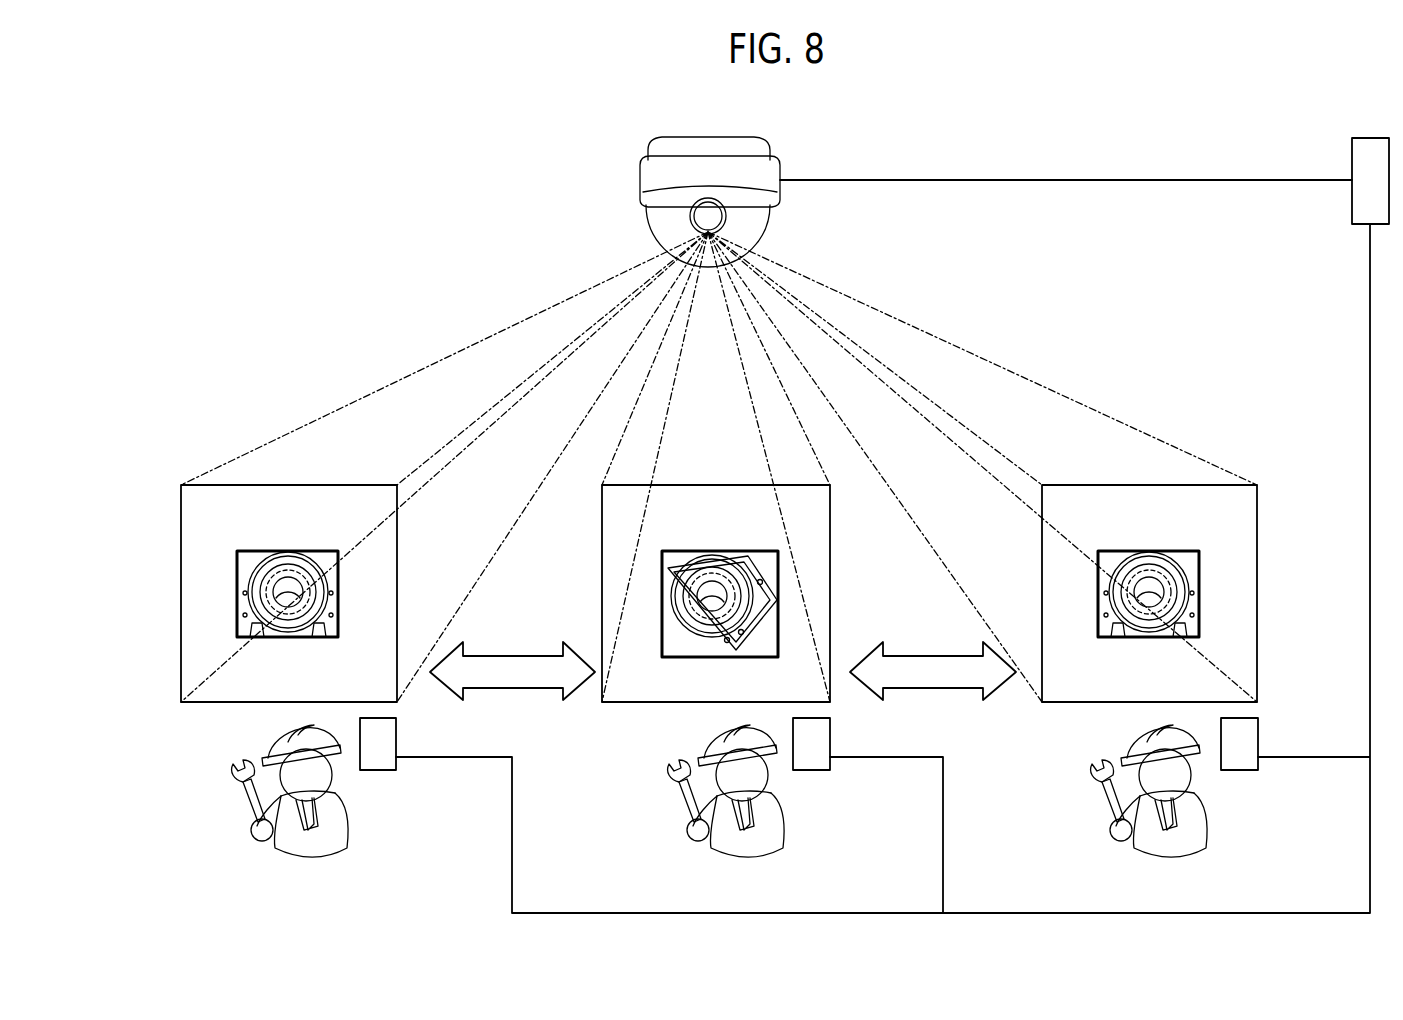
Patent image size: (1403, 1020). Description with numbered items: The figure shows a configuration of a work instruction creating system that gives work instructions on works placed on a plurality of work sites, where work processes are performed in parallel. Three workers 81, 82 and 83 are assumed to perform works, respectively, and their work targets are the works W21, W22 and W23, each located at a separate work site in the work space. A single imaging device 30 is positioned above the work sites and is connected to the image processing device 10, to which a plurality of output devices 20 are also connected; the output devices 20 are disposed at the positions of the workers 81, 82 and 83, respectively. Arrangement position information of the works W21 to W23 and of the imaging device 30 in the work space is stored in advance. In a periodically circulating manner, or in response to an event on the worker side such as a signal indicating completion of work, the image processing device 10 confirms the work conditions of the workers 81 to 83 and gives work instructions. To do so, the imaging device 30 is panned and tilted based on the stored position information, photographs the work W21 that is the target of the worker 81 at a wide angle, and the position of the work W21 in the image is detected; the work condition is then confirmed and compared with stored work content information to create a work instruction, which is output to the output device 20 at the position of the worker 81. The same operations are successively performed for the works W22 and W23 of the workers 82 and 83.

The image processing device 10 is at (1370, 138).
The output device 20 is at (398, 733).
The imaging device 30 is at (641, 178).
The work W21 is at (237, 596).
The work W22 is at (778, 612).
The work W23 is at (1200, 590).
The worker 81 is at (342, 826).
The worker 82 is at (776, 826).
The worker 83 is at (1198, 826).